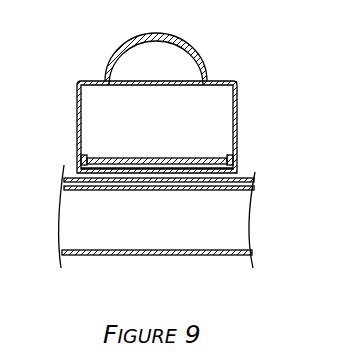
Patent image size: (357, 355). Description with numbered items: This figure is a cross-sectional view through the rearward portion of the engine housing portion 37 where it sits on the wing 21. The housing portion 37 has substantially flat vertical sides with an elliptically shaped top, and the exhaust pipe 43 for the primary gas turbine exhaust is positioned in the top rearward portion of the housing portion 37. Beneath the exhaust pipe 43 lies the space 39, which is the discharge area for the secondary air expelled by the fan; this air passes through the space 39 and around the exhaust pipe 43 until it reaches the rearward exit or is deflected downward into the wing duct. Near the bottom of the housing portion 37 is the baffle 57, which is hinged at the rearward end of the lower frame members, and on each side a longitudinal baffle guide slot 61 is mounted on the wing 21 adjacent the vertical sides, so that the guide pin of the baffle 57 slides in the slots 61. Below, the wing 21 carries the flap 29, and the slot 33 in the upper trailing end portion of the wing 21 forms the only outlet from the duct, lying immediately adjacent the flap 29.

The wing 21 is at (68, 181).
The flap 29 is at (234, 230).
The slot 33 is at (235, 177).
The housing portion 37 is at (224, 77).
The space 39 is at (173, 114).
The exhaust pipe 43 is at (170, 65).
The baffle 57 is at (152, 158).
The baffle guide slot 61 is at (86, 157).